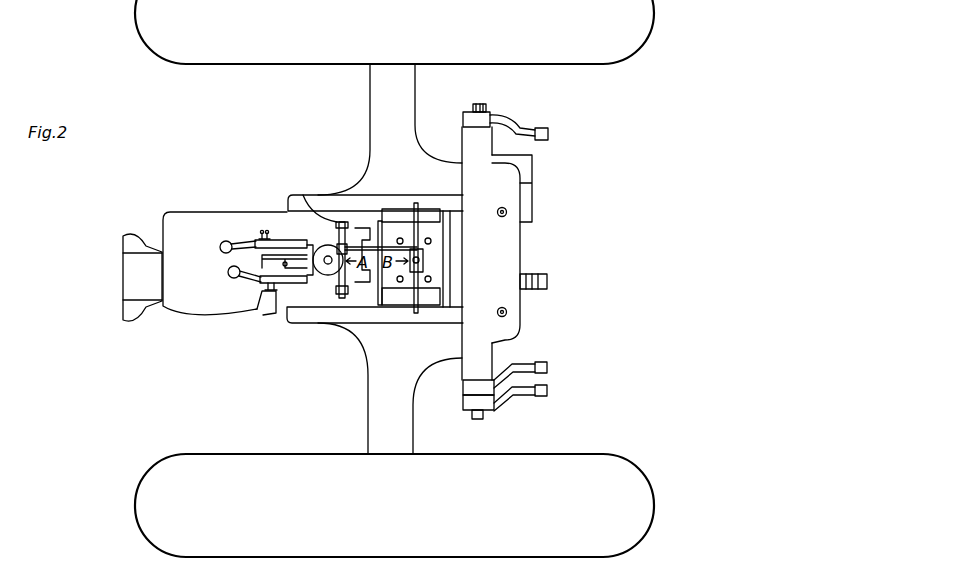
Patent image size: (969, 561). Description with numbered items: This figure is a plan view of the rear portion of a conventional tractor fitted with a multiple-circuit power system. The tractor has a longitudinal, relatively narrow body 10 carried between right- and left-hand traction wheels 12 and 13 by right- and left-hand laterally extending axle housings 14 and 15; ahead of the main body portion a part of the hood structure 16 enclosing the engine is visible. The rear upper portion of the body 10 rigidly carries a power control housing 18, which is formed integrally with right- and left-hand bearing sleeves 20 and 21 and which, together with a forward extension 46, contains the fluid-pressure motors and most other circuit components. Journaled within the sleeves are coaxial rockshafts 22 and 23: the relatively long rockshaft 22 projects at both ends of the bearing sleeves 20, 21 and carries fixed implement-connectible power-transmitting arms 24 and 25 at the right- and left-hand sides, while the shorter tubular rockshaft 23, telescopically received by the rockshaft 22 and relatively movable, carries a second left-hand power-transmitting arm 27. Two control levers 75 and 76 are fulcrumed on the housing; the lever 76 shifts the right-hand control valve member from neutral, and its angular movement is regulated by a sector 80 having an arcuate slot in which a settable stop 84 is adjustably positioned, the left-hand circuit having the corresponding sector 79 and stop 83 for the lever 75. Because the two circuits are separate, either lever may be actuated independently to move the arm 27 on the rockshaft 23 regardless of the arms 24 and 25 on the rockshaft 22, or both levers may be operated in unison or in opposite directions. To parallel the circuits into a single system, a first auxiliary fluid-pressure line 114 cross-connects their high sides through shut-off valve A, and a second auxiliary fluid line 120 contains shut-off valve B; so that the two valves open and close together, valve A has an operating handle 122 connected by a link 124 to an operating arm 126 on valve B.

The body 10 is at (172, 212).
The right-hand traction wheel 12 is at (249, 54).
The left-hand traction wheel 13 is at (212, 457).
The right-hand axle housing 14 is at (370, 95).
The left-hand axle housing 15 is at (368, 427).
The hood structure 16 is at (128, 237).
The power control housing 18 is at (493, 248).
The right-hand bearing sleeve 20 is at (470, 138).
The left-hand bearing sleeve 21 is at (470, 367).
The rockshaft 22 is at (489, 112).
The rockshaft 23 is at (462, 387).
The power-transmitting arm 24 is at (549, 135).
The power-transmitting arm 25 is at (548, 392).
The power-transmitting arm 27 is at (548, 369).
The forward extension 46 is at (362, 228).
The control lever 75 is at (233, 278).
The control lever 76 is at (232, 241).
The sector 79 is at (276, 287).
The sector 80 is at (262, 232).
The settable stop 83 is at (263, 303).
The settable stop 84 is at (264, 231).
The first auxiliary fluid-pressure line 114 is at (308, 195).
The second auxiliary fluid line 120 is at (418, 204).
The operating handle 122 is at (341, 293).
The link 124 is at (380, 222).
The operating arm 126 is at (424, 258).